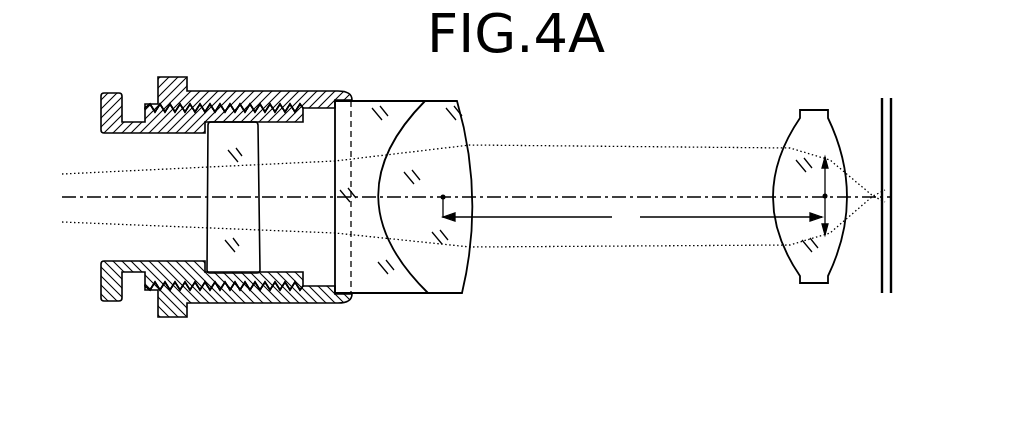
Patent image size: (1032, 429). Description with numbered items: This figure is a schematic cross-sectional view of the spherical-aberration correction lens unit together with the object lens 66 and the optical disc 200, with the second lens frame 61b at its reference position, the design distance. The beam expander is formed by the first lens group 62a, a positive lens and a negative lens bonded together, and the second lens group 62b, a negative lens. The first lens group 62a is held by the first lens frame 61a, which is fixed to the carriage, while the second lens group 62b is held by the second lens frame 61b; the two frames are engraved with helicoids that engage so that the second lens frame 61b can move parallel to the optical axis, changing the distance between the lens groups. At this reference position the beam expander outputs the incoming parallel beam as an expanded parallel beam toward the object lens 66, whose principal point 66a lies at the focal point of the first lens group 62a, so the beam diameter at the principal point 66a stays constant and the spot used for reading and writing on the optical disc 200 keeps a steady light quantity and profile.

The first lens frame 61a is at (257, 92).
The second lens frame 61b is at (104, 94).
The first lens group 62a is at (465, 302).
The second lens group 62b is at (217, 245).
The object lens 66 is at (800, 136).
The principal point 66a is at (824, 195).
The optical disc 200 is at (882, 118).